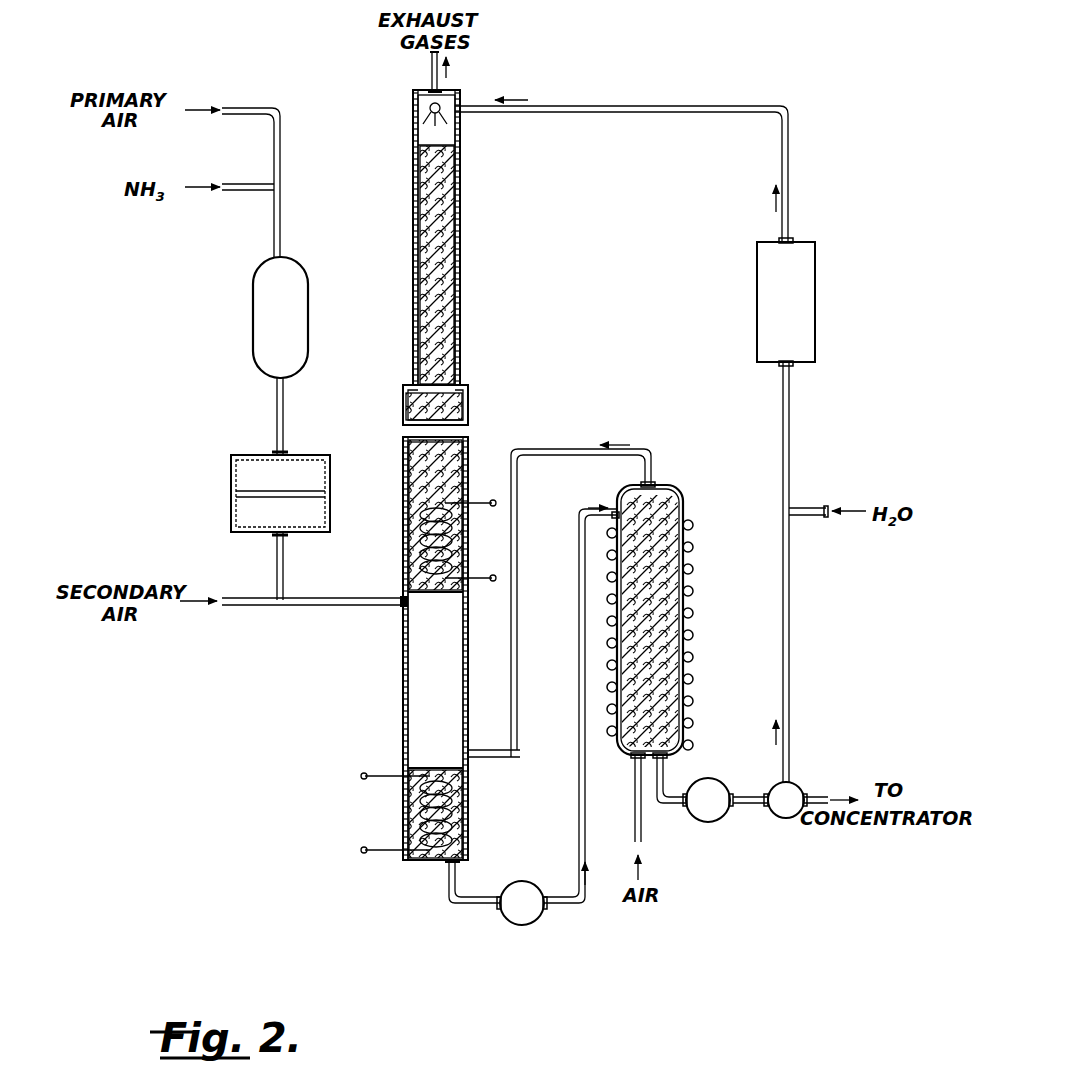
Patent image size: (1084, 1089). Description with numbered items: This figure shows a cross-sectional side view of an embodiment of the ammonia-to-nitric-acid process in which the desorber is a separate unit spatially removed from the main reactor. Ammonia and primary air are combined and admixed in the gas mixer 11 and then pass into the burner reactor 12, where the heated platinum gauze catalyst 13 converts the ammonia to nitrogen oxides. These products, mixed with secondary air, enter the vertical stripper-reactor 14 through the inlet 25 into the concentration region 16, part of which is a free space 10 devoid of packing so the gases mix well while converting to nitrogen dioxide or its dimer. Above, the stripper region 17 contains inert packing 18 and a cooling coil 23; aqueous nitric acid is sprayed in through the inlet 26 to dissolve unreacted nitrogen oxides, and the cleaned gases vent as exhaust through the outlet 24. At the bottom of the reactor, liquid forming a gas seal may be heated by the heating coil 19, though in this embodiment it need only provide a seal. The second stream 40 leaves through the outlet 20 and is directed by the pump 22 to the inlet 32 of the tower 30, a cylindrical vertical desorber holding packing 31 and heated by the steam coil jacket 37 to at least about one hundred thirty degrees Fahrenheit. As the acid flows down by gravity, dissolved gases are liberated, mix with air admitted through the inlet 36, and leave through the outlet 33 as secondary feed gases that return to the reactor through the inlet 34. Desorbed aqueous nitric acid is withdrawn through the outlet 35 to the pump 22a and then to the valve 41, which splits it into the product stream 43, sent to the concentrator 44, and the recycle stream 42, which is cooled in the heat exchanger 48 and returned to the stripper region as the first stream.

The free space 10 is at (434, 677).
The gas mixer 11 is at (252, 318).
The burner reactor 12 is at (232, 455).
The platinum gauze catalyst 13 is at (255, 507).
The reactor 14 is at (413, 282).
The concentration region 16 is at (420, 706).
The stripper region 17 is at (448, 330).
The packing 18 is at (452, 246).
The heating coil 19 is at (372, 776).
The outlet 20 is at (445, 865).
The pump 22 is at (518, 925).
The pump 22a is at (708, 822).
The cooling coil 23 is at (455, 500).
The outlet 24 is at (440, 97).
The inlet 25 is at (403, 608).
The inlet 26 is at (452, 116).
The tower 30 is at (693, 612).
The packing 31 is at (665, 547).
The inlet 32 is at (622, 492).
The outlet 33 is at (655, 482).
The inlet 34 is at (470, 760).
The outlet 35 is at (670, 758).
The inlet 36 is at (640, 762).
The steam coil jacket 37 is at (693, 660).
The second stream 40 is at (455, 892).
The valve 41 is at (779, 818).
The recycle stream 42 is at (790, 650).
The product stream 43 is at (805, 792).
The concentrator 44 is at (850, 838).
The heat exchanger 48 is at (810, 333).